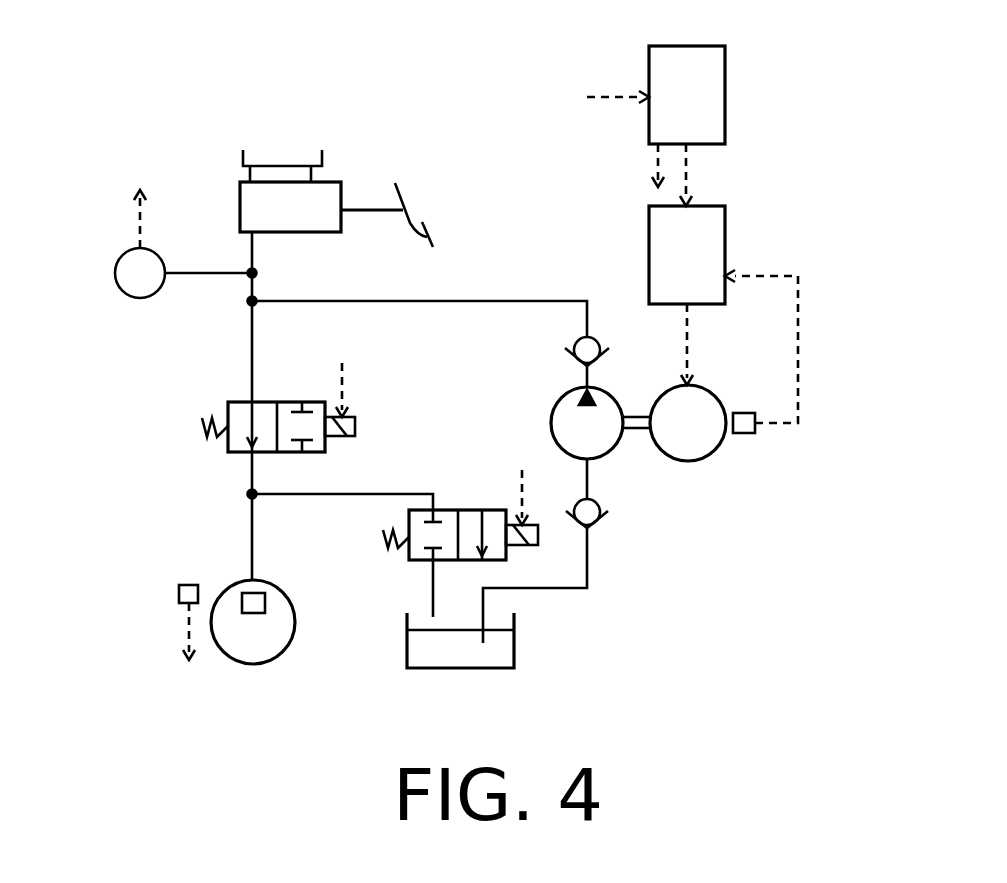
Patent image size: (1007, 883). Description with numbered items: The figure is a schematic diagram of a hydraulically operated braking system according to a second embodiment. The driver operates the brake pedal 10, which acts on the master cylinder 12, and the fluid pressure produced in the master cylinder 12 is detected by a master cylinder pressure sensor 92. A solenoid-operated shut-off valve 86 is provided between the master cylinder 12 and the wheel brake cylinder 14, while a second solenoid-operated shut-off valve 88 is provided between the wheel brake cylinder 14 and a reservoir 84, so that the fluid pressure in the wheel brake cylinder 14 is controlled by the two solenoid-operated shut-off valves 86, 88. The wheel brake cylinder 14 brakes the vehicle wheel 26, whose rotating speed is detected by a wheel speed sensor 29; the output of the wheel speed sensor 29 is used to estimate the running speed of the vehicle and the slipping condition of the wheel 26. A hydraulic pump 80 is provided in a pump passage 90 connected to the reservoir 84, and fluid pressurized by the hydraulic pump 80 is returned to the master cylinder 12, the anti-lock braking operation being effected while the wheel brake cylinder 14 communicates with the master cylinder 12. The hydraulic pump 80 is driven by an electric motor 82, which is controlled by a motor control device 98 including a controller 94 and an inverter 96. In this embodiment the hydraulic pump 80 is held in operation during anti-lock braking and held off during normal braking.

The brake pedal 10 is at (407, 199).
The master cylinder 12 is at (327, 190).
The wheel brake cylinder 14 is at (265, 600).
The vehicle wheel 26 is at (232, 638).
The wheel speed sensor 29 is at (179, 594).
The hydraulic pump 80 is at (563, 422).
The electric motor 82 is at (687, 450).
The reservoir 84 is at (514, 650).
The solenoid-operated shut-off valve 86 is at (265, 410).
The solenoid-operated shut-off valve 88 is at (468, 520).
The pump passage 90 is at (588, 557).
The master cylinder pressure sensor 92 is at (125, 273).
The controller 94 is at (705, 87).
The inverter 96 is at (705, 237).
The motor control device 98 is at (778, 183).